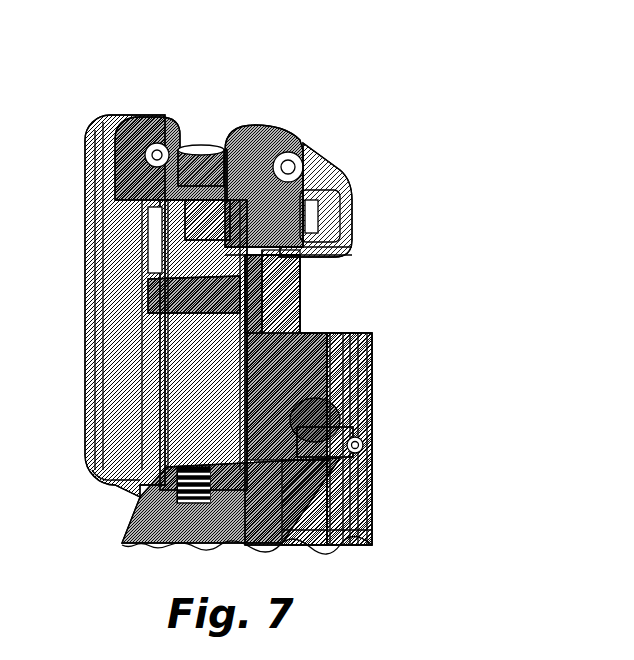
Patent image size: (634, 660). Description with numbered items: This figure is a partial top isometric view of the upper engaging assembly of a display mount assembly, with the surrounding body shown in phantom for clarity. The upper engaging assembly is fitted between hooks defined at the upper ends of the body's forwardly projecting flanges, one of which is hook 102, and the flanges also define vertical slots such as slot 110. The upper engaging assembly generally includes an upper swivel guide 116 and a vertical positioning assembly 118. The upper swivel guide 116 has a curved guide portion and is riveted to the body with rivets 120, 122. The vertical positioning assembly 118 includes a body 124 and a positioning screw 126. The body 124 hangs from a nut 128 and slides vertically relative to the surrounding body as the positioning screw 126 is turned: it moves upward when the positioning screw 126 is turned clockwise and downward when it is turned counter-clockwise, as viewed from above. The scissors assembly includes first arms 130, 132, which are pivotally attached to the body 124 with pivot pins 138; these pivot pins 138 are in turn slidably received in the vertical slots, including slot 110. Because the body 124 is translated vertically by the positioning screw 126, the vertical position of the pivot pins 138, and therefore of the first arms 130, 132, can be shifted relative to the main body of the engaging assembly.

The hook 102 is at (335, 207).
The vertical slot 110 is at (345, 493).
The upper swivel guide 116 is at (150, 118).
The vertical positioning assembly 118 is at (190, 377).
The rivet 120 is at (108, 120).
The rivet 122 is at (288, 140).
The body 124 is at (273, 367).
The positioning screw 126 is at (199, 150).
The nut 128 is at (140, 290).
The first arm 130 is at (140, 520).
The first arm 132 is at (372, 530).
The pivot pin 138 is at (360, 438).